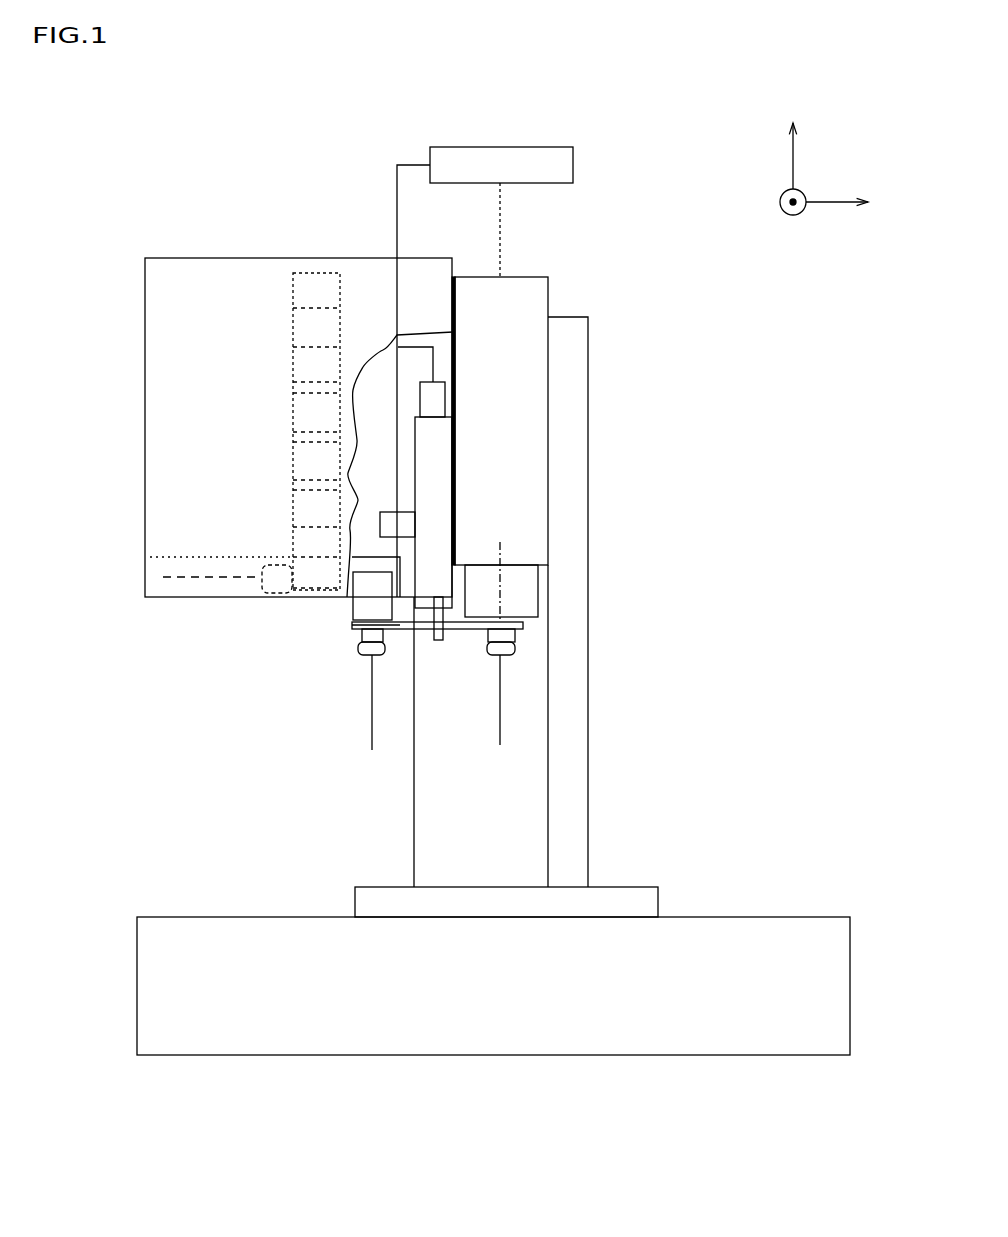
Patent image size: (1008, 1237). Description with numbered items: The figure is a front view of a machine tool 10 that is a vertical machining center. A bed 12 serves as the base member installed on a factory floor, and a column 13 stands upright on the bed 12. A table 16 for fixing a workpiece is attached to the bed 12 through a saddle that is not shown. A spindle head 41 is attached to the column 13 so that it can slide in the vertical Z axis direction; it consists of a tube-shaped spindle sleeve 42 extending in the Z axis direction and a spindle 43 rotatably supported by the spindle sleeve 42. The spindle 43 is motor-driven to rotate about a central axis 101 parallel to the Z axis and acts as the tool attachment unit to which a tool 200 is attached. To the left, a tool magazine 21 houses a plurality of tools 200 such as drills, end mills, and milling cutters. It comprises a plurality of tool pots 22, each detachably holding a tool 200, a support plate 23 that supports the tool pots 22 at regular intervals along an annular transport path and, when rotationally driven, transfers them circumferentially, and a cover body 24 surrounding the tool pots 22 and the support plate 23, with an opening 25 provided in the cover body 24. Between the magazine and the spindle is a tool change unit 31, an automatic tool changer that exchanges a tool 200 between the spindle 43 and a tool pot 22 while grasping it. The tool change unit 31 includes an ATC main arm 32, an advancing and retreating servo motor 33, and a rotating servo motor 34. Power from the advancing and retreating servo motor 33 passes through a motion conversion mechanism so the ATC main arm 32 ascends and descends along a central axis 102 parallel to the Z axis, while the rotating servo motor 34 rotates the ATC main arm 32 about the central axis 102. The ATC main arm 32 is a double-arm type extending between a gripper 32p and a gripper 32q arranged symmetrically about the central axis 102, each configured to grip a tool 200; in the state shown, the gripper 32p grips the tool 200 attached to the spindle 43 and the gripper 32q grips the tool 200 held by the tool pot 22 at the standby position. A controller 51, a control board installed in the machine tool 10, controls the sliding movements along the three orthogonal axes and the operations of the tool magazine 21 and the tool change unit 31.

The machine tool 10 is at (172, 130).
The bed 12 is at (775, 925).
The column 13 is at (583, 345).
The table 16 is at (632, 893).
The tool magazine 21 is at (152, 248).
The tool pot 22 is at (293, 465).
The support plate 23 is at (330, 385).
The cover body 24 is at (153, 325).
The opening 25 is at (158, 583).
The tool change unit 31 is at (443, 655).
The ATC main arm 32 is at (465, 705).
The gripper 32p is at (523, 623).
The gripper 32q is at (352, 625).
The advancing and retreating servo motor 33 is at (438, 395).
The rotating servo motor 34 is at (410, 525).
The spindle head 41 is at (540, 276).
The spindle sleeve 42 is at (540, 292).
The spindle 43 is at (528, 582).
The controller 51 is at (525, 147).
The central axis 101 is at (500, 595).
The central axis 102 is at (462, 567).
The tool 200 is at (360, 658).